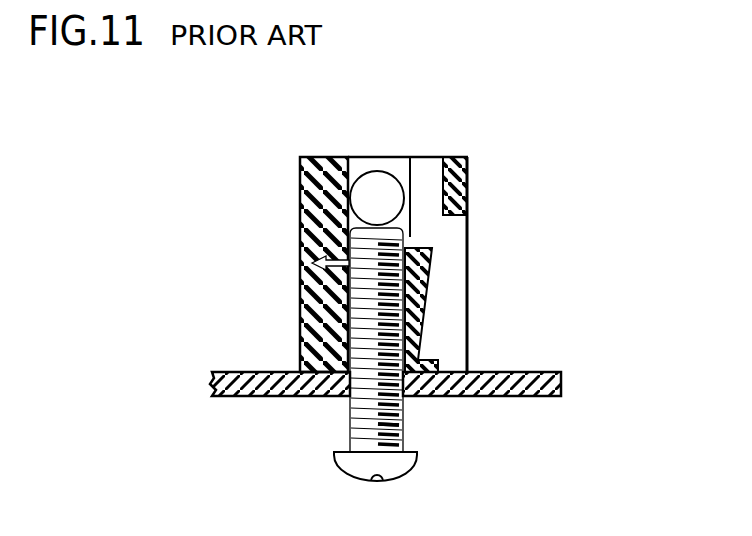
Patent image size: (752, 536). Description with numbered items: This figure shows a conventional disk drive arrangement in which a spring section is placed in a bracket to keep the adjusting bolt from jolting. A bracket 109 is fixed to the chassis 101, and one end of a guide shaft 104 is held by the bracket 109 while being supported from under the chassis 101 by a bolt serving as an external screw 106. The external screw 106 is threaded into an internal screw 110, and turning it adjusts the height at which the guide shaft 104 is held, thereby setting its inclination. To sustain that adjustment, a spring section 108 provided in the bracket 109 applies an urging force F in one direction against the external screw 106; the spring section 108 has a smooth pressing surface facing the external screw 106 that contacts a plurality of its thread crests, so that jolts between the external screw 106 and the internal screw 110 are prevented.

The chassis 101 is at (540, 386).
The guide shaft 104 is at (377, 188).
The external screw 106 is at (350, 426).
The spring section 108 is at (425, 280).
The bracket 109 is at (468, 190).
The internal screw 110 is at (403, 424).
The urging force F is at (318, 258).